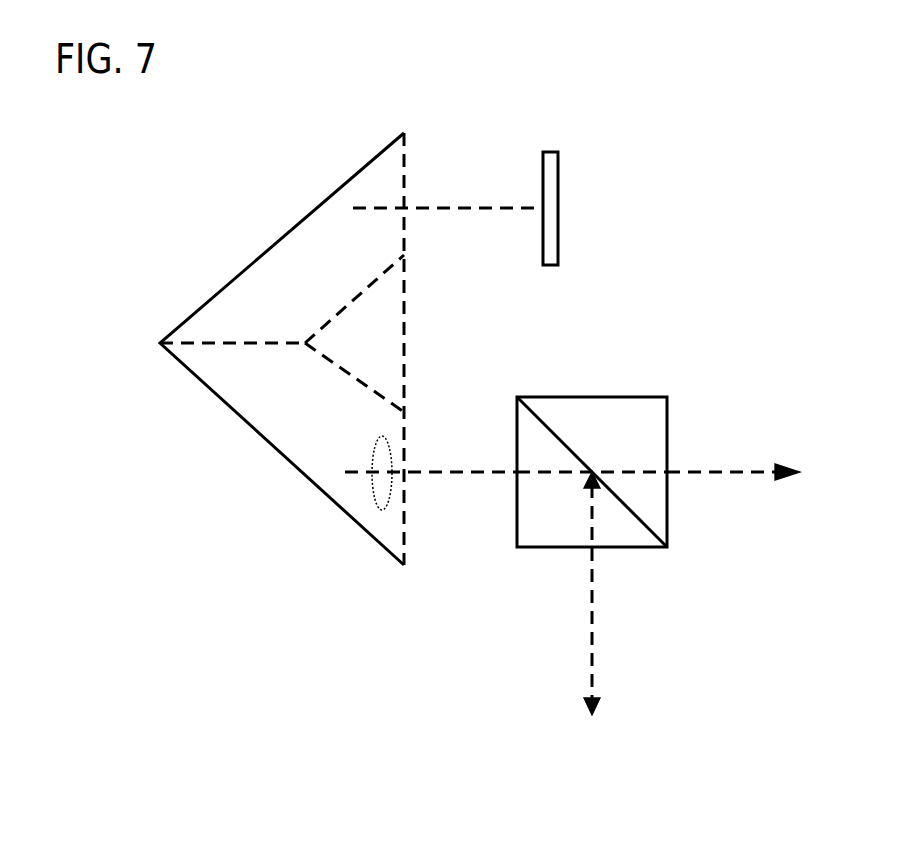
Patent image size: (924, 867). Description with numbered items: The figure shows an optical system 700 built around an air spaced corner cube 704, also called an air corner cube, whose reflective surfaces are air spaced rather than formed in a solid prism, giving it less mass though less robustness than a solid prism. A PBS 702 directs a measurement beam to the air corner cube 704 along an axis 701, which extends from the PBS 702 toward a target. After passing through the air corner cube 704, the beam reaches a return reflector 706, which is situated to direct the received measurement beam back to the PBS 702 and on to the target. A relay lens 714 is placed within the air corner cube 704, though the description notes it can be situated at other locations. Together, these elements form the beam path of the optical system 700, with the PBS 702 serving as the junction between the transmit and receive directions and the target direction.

The optical system 700 is at (770, 227).
The axis 701 is at (725, 470).
The PBS 702 is at (630, 397).
The air spaced corner cube 704 is at (312, 205).
The return reflector 706 is at (551, 152).
The relay lens 714 is at (370, 450).